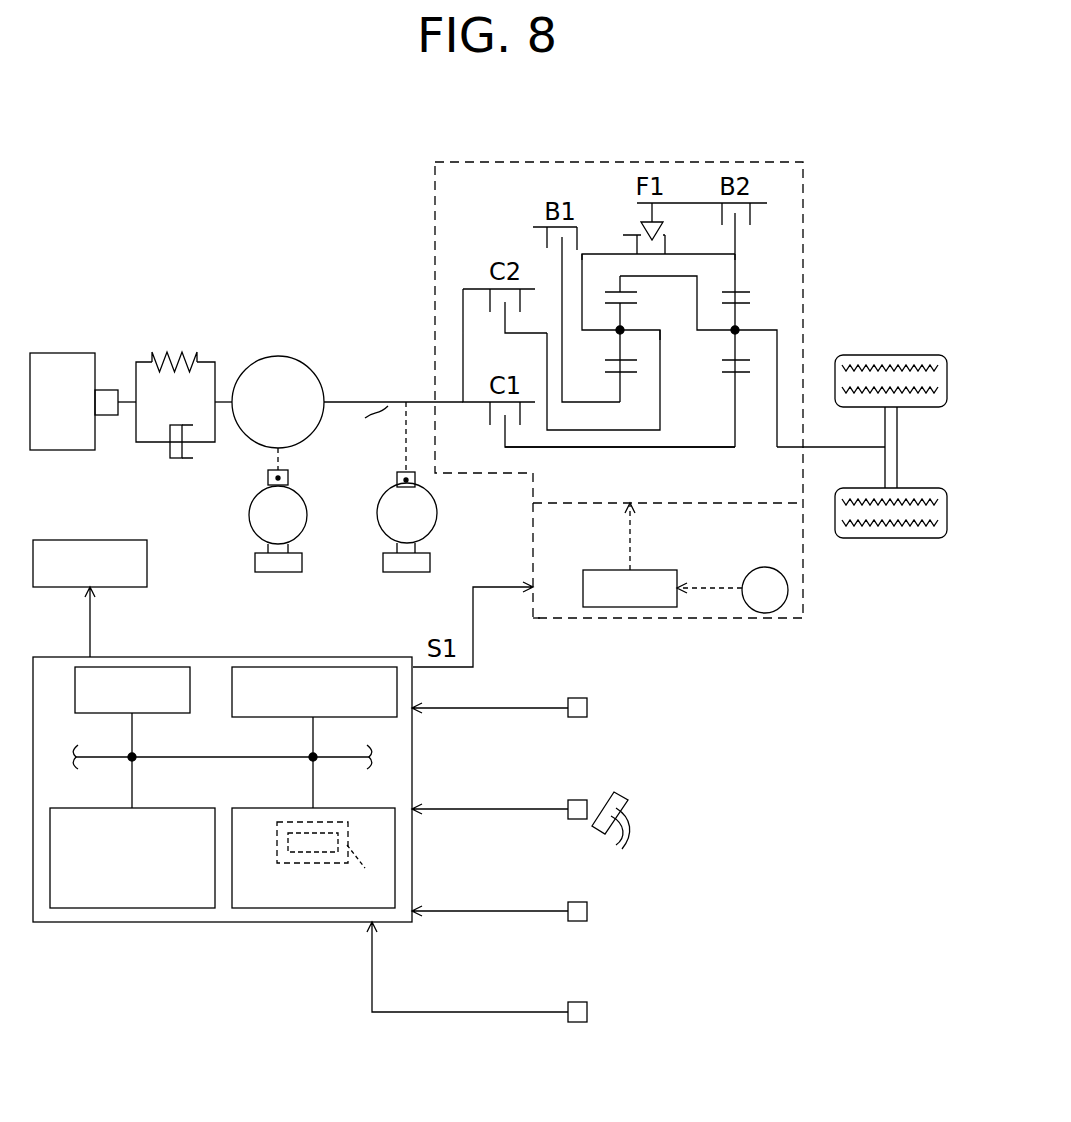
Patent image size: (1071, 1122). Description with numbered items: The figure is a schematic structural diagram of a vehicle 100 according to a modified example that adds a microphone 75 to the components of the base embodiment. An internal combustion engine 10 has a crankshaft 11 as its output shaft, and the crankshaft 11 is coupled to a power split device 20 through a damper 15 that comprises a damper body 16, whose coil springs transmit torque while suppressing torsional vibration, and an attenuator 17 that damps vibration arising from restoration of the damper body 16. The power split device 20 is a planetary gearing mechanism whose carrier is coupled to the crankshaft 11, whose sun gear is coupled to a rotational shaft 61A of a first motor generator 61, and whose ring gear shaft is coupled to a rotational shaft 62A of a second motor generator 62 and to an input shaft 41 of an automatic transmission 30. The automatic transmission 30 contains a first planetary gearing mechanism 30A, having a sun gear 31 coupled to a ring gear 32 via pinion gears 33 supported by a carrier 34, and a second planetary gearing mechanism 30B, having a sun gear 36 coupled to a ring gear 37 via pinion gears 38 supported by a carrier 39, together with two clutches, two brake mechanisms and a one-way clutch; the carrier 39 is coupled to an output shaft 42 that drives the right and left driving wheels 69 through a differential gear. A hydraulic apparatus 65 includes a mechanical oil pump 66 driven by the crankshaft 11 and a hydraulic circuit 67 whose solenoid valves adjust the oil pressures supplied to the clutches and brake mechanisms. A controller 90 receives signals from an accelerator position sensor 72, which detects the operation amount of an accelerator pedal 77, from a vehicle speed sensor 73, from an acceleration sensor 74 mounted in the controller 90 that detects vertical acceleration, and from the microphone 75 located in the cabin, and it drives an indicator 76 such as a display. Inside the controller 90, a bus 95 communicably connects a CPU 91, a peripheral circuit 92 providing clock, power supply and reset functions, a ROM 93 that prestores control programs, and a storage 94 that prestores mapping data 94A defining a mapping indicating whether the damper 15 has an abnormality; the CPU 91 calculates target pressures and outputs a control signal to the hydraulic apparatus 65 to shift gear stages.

The vehicle 100 is at (191, 241).
The internal combustion engine 10 is at (62, 353).
The crankshaft 11 is at (105, 390).
The damper 15 is at (228, 344).
The damper body 16 is at (172, 355).
The attenuator 17 is at (187, 460).
The power split device 20 is at (320, 370).
The automatic transmission 30 is at (434, 185).
The first planetary gearing mechanism 30A is at (671, 398).
The second planetary gearing mechanism 30B is at (789, 293).
The sun gear 31 is at (575, 402).
The ring gear 32 is at (672, 276).
The pinion gears 33 is at (624, 312).
The carrier 34 is at (600, 254).
The sun gear 36 is at (737, 425).
The ring gear 37 is at (738, 262).
The pinion gears 38 is at (738, 312).
The carrier 39 is at (778, 352).
The input shaft 41 is at (450, 403).
The output shaft 42 is at (797, 450).
The first motor generator 61 is at (255, 520).
The rotational shaft 61A is at (289, 471).
The second motor generator 62 is at (437, 515).
The rotational shaft 62A is at (416, 474).
The hydraulic apparatus 65 is at (735, 620).
The oil pump 66 is at (763, 567).
The hydraulic circuit 67 is at (663, 566).
The driving wheels 69 is at (890, 355).
The accelerator position sensor 72 is at (579, 800).
The vehicle speed sensor 73 is at (577, 698).
The acceleration sensor 74 is at (579, 902).
The microphone 75 is at (579, 1002).
The indicator 76 is at (58, 540).
The accelerator pedal 77 is at (610, 796).
The controller 90 is at (52, 656).
The central processing unit 91 is at (150, 715).
The peripheral circuit 92 is at (328, 667).
The read-only memory 93 is at (132, 910).
The storage 94 is at (313, 910).
The mapping data 94A is at (343, 822).
The bus 95 is at (330, 757).